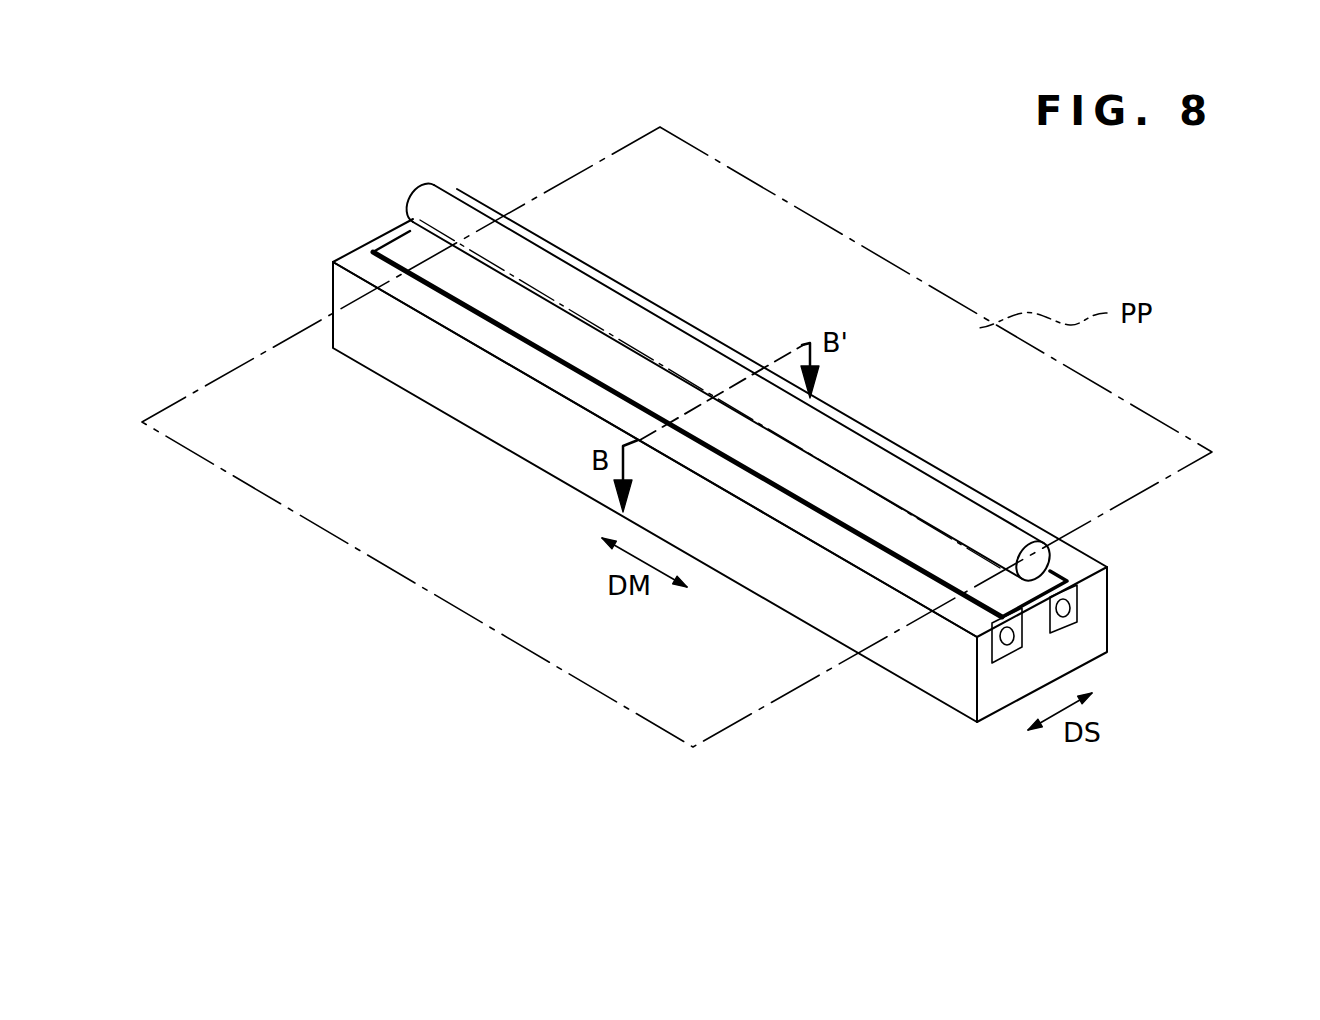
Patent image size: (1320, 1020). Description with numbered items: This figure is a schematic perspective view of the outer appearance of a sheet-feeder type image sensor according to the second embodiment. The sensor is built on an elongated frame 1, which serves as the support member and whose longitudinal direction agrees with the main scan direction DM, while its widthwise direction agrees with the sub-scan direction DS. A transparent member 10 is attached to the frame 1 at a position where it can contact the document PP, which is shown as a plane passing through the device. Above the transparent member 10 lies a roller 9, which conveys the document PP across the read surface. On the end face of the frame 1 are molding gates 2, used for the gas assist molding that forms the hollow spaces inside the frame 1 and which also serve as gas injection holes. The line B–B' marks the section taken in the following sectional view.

The frame 1 is at (463, 405).
The molding gates 2 is at (1007, 638).
The roller 9 is at (443, 211).
The transparent member 10 is at (400, 248).